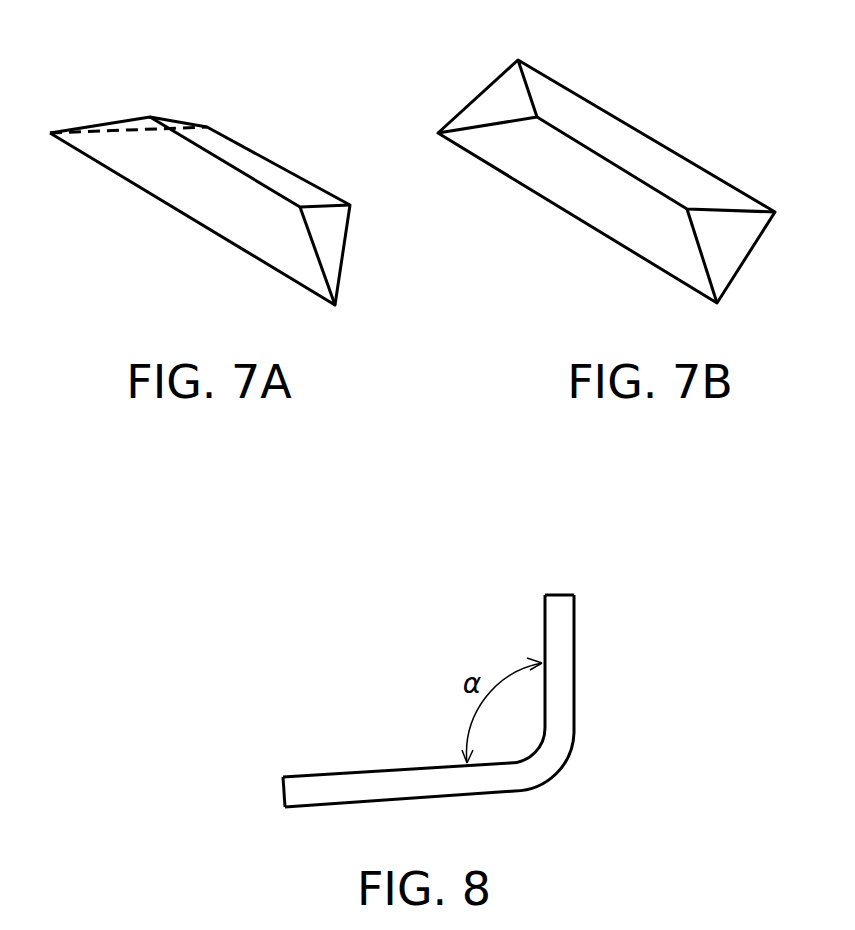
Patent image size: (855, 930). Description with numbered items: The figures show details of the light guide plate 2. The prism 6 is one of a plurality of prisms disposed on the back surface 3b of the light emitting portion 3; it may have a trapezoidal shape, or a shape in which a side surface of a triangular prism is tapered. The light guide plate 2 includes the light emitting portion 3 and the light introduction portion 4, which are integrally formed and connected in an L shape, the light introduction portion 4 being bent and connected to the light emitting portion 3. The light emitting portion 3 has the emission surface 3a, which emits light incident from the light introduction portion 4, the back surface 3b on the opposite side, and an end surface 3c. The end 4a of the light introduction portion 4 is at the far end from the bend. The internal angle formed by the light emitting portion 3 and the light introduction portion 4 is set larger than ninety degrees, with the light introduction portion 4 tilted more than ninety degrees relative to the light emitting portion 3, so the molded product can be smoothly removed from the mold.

In FIG. 7A, the prism 6 is at (113, 110).
In FIG. 7B, the prism 6 is at (458, 95).
In FIG. 8, the light guide plate 2 is at (433, 656).
In FIG. 8, the light emitting portion 3 is at (572, 615).
In FIG. 8, the emission surface 3a is at (580, 617).
In FIG. 8, the back surface 3b is at (545, 635).
In FIG. 8, the end surface 3c is at (560, 593).
In FIG. 8, the light introduction portion 4 is at (368, 744).
In FIG. 8, the end of horizontal portion 4a is at (283, 797).